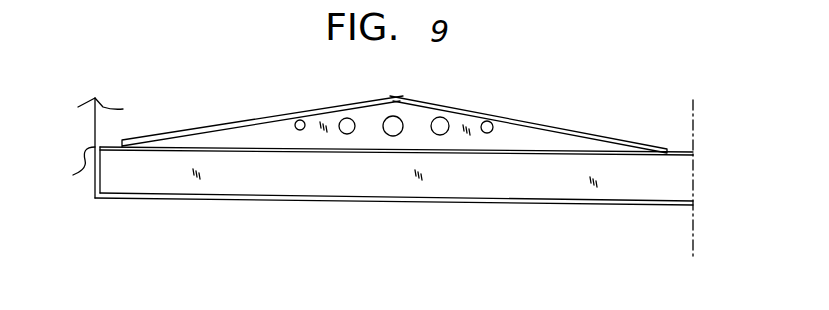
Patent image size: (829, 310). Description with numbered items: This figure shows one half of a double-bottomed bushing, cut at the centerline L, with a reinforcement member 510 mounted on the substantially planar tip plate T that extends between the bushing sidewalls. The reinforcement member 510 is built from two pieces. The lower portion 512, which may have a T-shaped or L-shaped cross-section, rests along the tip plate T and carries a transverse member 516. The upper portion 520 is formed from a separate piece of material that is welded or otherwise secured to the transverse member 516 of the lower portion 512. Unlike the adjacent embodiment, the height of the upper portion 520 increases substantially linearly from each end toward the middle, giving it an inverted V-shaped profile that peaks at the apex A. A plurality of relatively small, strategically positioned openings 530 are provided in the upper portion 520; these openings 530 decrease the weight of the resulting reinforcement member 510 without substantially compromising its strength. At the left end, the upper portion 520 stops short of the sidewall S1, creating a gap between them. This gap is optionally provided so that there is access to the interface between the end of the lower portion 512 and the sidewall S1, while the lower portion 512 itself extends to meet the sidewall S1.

The reinforcement member 510 is at (558, 104).
The lower portion 512 is at (290, 180).
The transverse member 516 is at (223, 147).
The upper portion 520 is at (277, 113).
The openings 530 is at (401, 119).
The apex A is at (395, 97).
The tip plate T is at (562, 200).
The centerline L is at (695, 233).
The sidewall S1 is at (79, 165).